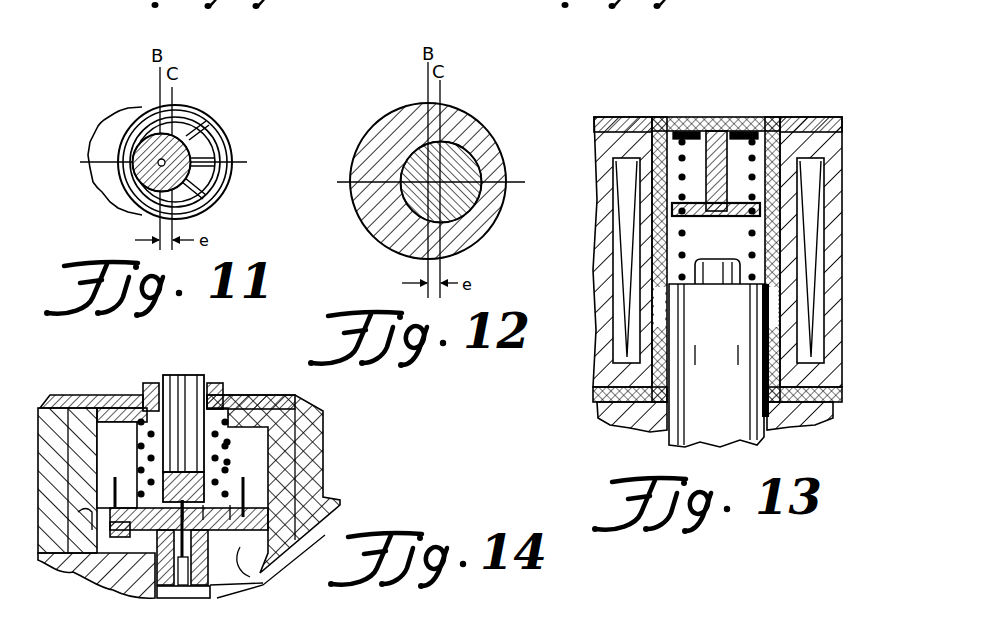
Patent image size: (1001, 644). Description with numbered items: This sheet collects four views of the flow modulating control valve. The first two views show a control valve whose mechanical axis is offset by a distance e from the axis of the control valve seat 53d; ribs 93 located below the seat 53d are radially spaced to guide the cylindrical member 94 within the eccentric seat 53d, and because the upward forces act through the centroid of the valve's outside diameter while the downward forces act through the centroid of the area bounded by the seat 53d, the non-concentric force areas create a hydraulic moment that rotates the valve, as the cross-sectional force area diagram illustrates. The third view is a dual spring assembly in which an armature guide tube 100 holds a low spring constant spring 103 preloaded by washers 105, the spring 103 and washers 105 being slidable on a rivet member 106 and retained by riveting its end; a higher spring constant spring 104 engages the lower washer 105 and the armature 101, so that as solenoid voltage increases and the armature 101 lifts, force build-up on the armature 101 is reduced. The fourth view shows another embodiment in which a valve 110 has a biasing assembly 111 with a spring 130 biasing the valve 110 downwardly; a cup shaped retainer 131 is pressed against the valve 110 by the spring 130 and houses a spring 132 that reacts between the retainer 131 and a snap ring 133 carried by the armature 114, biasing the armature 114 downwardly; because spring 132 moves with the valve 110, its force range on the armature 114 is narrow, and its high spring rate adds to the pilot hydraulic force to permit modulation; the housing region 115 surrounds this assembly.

In FIG. 11, the control valve seat 53d is at (229, 180).
In FIG. 11, the ribs 93 is at (205, 135).
In FIG. 11, the cylindrical member 94 is at (136, 145).
In FIG. 13, the armature guide tube 100 is at (715, 117).
In FIG. 13, the armature 101 is at (734, 378).
In FIG. 13, the low spring constant spring 103 is at (727, 163).
In FIG. 13, the spring 104 is at (752, 233).
In FIG. 13, the washers 105 is at (674, 135).
In FIG. 13, the rivet member 106 is at (768, 122).
In FIG. 14, the valve 110 is at (243, 550).
In FIG. 14, the biasing assembly 111 is at (240, 473).
In FIG. 14, the armature 114 is at (178, 383).
In FIG. 14, the housing cavity 115 is at (137, 450).
In FIG. 14, the spring 130 is at (225, 435).
In FIG. 14, the cup shaped retainer 131 is at (228, 442).
In FIG. 14, the spring 132 is at (228, 462).
In FIG. 14, the snap ring 133 is at (300, 530).